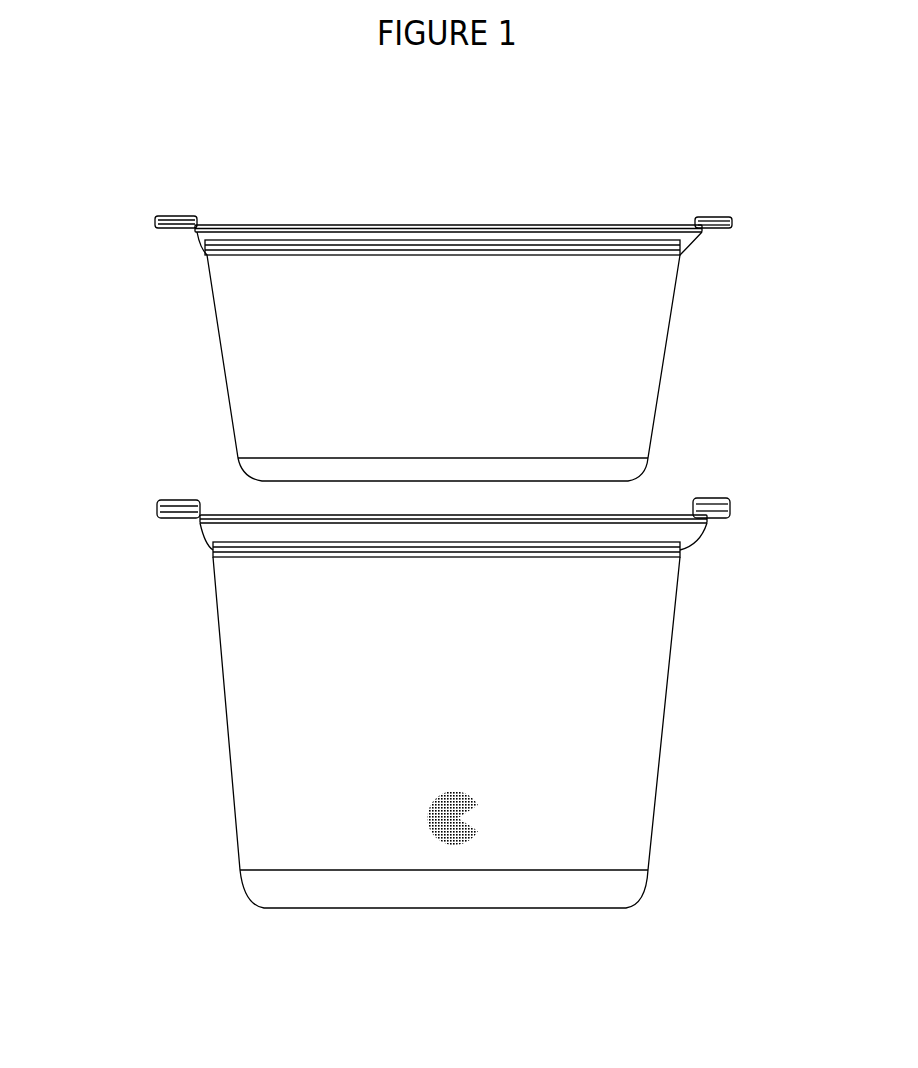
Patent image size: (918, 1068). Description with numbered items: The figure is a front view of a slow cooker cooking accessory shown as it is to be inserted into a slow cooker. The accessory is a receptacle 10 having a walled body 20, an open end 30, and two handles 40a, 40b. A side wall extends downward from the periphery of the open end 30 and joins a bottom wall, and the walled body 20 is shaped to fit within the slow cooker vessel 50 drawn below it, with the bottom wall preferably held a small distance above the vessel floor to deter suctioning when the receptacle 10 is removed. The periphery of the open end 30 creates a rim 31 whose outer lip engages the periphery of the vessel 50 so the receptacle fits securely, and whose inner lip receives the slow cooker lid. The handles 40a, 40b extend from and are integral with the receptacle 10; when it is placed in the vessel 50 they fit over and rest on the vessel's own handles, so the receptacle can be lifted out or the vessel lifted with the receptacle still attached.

The receptacle 10 is at (167, 348).
The walled body 20 is at (328, 373).
The open end 30 is at (425, 195).
The rim 31 is at (545, 232).
The handle 40a is at (163, 217).
The handle 40b is at (720, 220).
The slow cooker vessel 50 is at (195, 685).